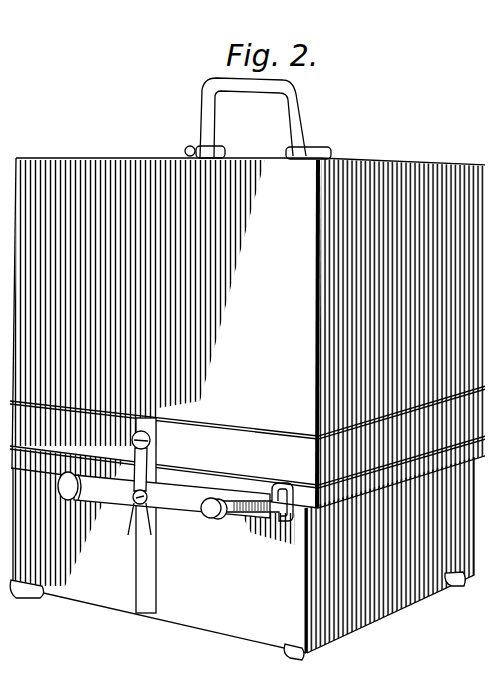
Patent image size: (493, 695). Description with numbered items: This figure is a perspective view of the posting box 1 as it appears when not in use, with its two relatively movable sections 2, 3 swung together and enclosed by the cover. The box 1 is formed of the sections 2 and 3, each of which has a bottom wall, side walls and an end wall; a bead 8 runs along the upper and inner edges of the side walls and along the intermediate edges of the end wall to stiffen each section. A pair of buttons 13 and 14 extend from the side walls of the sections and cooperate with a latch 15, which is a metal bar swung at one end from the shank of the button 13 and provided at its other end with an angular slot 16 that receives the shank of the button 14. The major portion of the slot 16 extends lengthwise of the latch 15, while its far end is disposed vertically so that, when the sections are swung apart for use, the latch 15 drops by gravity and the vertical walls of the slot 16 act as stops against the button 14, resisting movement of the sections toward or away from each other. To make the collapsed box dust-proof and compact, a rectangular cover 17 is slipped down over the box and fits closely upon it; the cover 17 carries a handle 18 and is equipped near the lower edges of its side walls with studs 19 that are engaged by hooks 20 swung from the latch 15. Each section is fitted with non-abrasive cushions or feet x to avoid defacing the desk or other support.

The box 1 is at (462, 495).
The box section 2 is at (216, 610).
The box section 3 is at (88, 590).
The bead 8 is at (148, 543).
The button 13 is at (50, 493).
The button 14 is at (208, 490).
The latch 15 is at (172, 496).
The angular slot 16 is at (240, 512).
The cover 17 is at (369, 152).
The handle 18 is at (288, 80).
The stud 19 is at (142, 434).
The hook 20 is at (112, 497).
The feet x is at (290, 652).